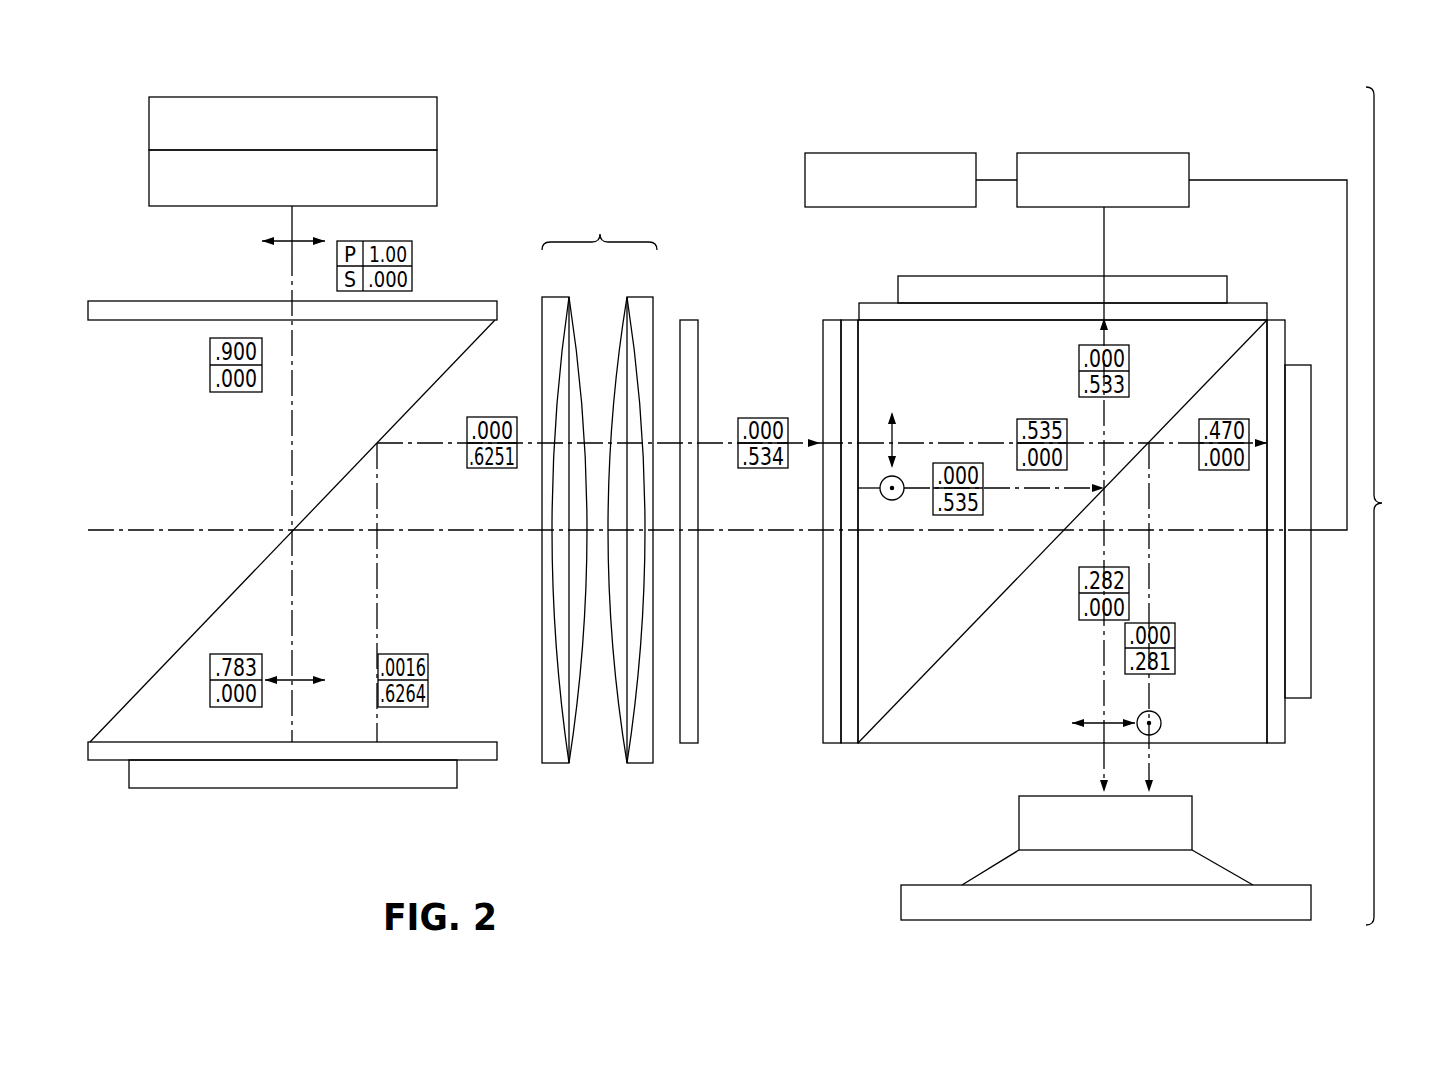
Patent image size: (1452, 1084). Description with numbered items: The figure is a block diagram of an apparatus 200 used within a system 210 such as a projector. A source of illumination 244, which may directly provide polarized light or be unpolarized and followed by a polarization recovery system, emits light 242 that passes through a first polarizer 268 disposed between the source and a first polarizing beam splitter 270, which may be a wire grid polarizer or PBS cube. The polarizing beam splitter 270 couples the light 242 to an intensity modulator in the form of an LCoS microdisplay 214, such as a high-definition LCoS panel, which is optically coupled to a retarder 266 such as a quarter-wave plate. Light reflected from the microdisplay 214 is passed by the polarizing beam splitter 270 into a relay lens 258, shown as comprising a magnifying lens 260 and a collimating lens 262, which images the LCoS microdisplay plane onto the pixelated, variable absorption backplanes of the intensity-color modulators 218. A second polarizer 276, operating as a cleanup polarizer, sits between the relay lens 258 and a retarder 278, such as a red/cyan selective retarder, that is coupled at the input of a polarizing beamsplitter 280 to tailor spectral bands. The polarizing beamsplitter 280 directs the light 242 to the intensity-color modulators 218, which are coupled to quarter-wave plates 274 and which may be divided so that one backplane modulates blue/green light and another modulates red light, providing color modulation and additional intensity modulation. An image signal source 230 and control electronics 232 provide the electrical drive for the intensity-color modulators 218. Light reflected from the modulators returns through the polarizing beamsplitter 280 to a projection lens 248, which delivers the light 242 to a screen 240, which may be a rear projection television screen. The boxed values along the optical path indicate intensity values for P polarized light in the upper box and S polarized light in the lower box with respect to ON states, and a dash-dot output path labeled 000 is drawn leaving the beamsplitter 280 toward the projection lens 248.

The apparatus 200 is at (1290, 150).
The system 210 is at (1382, 503).
The LCoS microdisplay 214 is at (293, 788).
The intensity-color modulator 218 is at (1170, 276).
The image signal source 230 is at (890, 153).
The control electronics 232 is at (1103, 153).
The screen 240 is at (1270, 885).
The light 242 is at (378, 590).
The source of illumination 244 is at (437, 125).
The projection lens 248 is at (1192, 822).
The relay lens 258 is at (600, 234).
The magnifying lens 260 is at (557, 297).
The collimating lens 262 is at (640, 297).
The retarder 266 is at (437, 741).
The first polarizer 268 is at (437, 300).
The first polarizing beam splitter 270 is at (425, 395).
The quarter-wave plate 274 is at (874, 303).
The second polarizer 276 is at (689, 320).
The retarder 278 is at (836, 745).
The polarizing beamsplitter 280 is at (997, 745).
The output beam polarization line 000 is at (1150, 500).